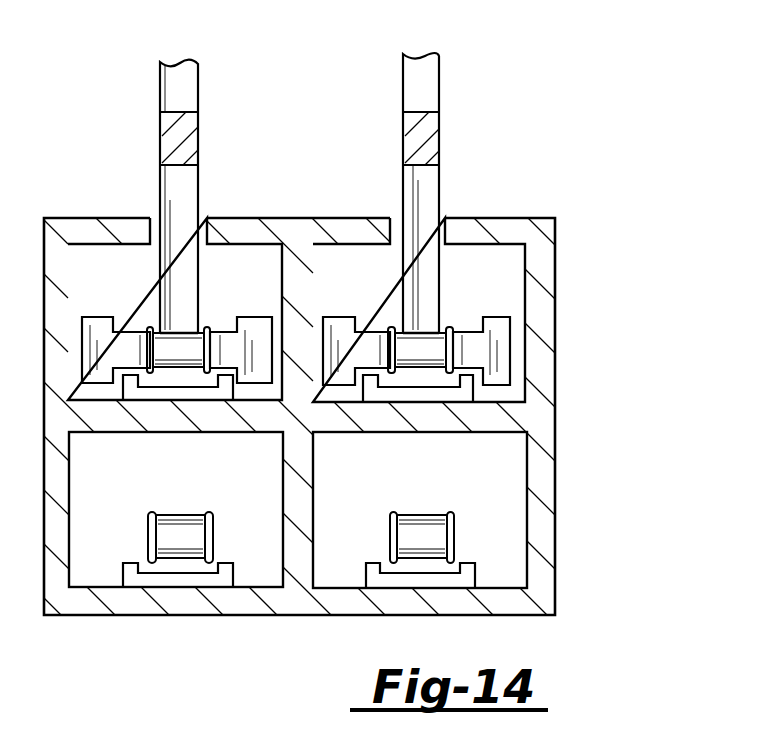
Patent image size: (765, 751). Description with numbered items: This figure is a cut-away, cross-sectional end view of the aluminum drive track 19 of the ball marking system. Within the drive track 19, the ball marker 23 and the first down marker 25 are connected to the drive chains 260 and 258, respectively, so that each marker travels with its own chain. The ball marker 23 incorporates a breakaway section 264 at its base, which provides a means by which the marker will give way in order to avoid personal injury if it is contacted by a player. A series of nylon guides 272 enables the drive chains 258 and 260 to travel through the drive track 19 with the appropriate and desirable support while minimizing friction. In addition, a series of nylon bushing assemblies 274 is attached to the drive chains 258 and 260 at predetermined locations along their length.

The drive track 19 is at (543, 278).
The ball marker 23 is at (203, 76).
The first down marker 25 is at (443, 78).
The breakaway section 264 is at (183, 135).
The nylon bushing assembly 274 is at (100, 337).
The drive chain 260 is at (205, 332).
The drive chain 258 is at (450, 333).
The nylon guide 272 is at (130, 560).